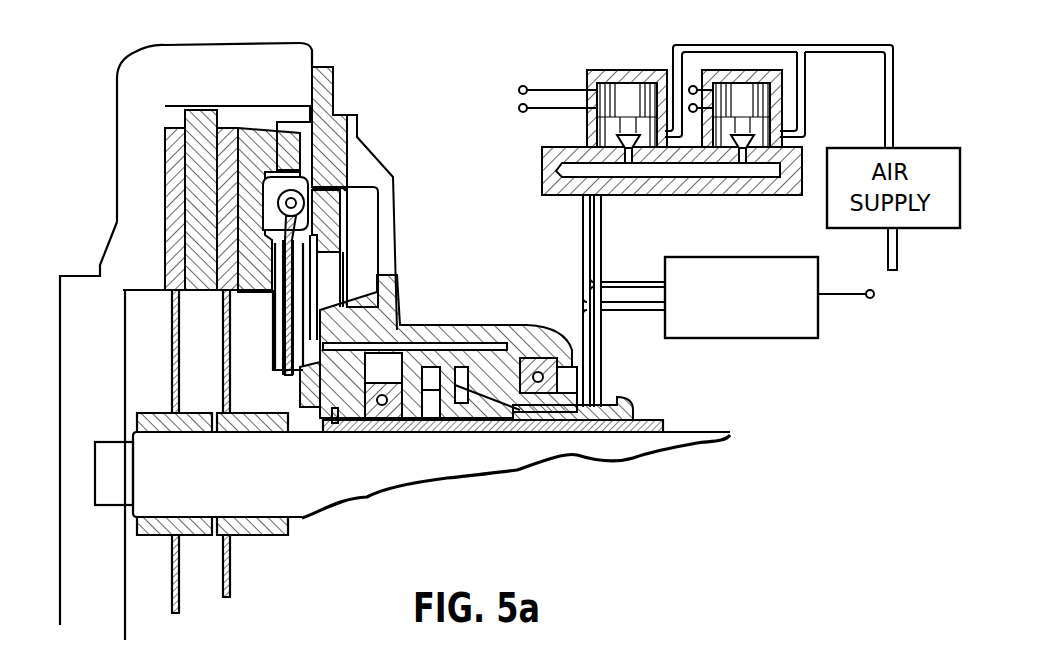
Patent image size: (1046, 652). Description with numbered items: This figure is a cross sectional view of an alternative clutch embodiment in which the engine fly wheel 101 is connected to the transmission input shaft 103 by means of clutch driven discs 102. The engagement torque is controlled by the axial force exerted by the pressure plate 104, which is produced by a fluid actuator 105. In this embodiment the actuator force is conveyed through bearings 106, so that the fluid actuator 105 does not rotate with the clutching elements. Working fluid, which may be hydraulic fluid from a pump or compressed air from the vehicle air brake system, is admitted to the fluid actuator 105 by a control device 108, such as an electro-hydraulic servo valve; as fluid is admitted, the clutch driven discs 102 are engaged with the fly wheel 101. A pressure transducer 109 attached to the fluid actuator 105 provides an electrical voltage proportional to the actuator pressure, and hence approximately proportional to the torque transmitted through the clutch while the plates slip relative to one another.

The engine fly wheel 101 is at (333, 68).
The clutch driven discs 102 is at (217, 144).
The transmission input shaft 103 is at (115, 505).
The pressure plate 104 is at (250, 152).
The fluid actuator 105 is at (415, 410).
The bearings 106 is at (378, 415).
The control device 108 is at (677, 197).
The pressure transducer 109 is at (752, 340).